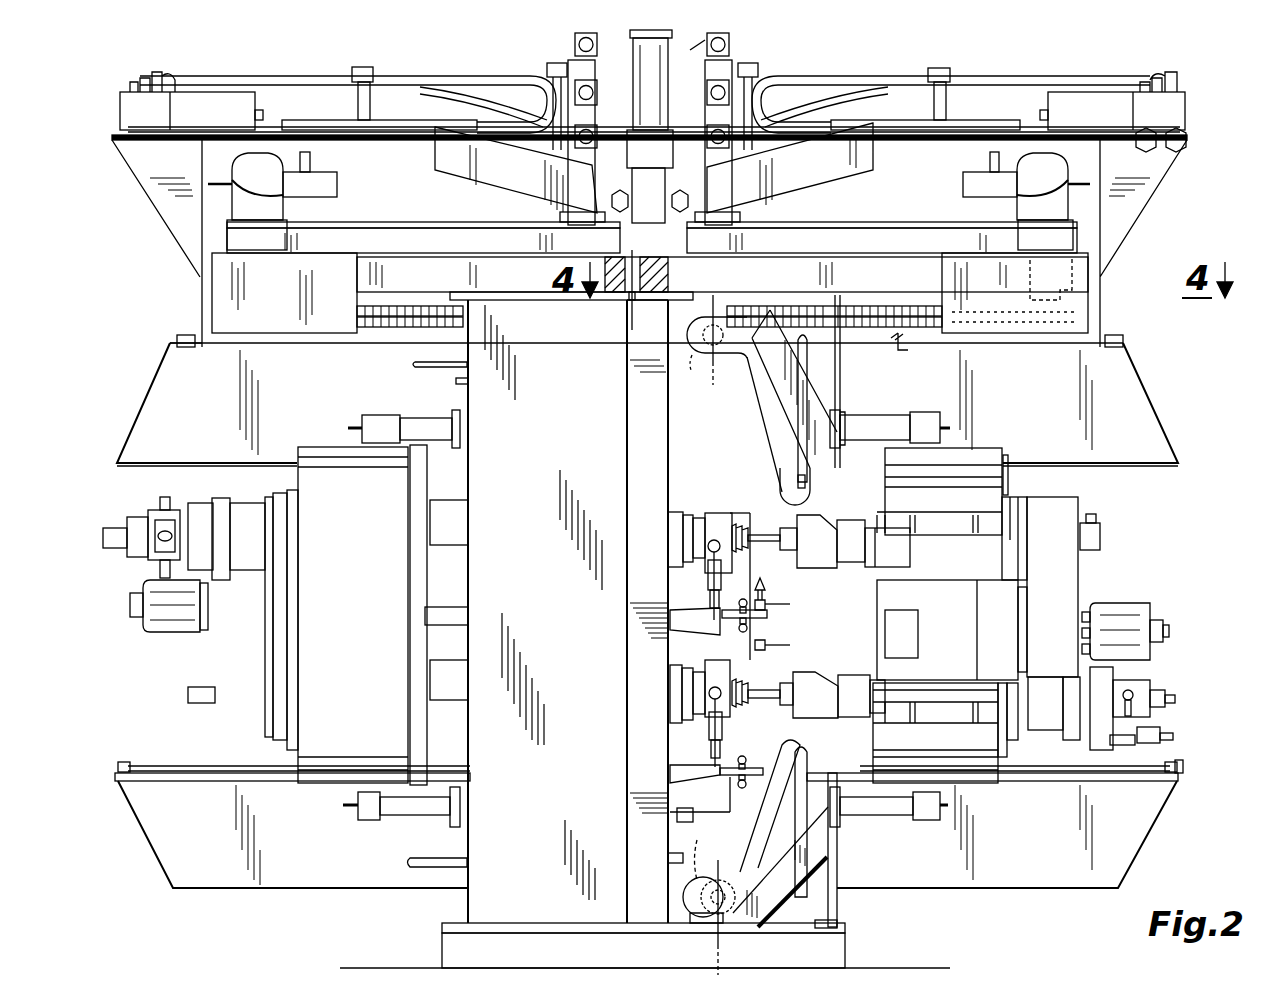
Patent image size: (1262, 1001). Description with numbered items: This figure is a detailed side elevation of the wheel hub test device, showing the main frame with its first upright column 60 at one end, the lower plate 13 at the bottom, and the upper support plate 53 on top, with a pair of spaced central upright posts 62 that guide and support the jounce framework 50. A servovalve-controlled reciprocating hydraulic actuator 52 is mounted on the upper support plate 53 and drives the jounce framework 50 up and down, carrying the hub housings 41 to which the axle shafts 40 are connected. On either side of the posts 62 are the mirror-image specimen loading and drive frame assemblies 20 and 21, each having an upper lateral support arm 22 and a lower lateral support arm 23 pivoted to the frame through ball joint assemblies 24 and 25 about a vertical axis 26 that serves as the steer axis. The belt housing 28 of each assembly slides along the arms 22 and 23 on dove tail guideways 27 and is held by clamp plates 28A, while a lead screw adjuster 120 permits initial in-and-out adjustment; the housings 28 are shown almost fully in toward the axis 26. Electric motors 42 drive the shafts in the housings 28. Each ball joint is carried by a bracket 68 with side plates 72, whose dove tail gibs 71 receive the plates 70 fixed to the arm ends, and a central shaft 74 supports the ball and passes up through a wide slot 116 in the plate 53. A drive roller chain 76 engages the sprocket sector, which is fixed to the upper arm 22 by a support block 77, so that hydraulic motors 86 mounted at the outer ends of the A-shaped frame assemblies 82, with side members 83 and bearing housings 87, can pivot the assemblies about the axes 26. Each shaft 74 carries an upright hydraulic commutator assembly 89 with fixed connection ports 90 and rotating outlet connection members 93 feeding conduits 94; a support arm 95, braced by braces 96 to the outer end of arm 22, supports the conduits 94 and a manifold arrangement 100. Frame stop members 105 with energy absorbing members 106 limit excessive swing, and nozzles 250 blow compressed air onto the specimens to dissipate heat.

The lower plate 13 is at (848, 944).
The specimen loading and drive frame assembly 20 is at (1154, 551).
The specimen loading and drive frame assembly 21 is at (148, 352).
The upper lateral support arm 22 is at (150, 405).
The lower lateral support arm 23 is at (150, 850).
The ball joint assembly 24 is at (687, 372).
The ball joint assembly 25 is at (690, 853).
The axis of pivoting 26 is at (715, 370).
The dove tail guideway 27 is at (178, 463).
The belt housing 28 is at (362, 602).
The clamp plate 28A is at (993, 448).
The axle shaft 40 is at (768, 535).
The hub housing 41 is at (738, 550).
The electric motor 42 is at (1003, 612).
The jounce framework 50 is at (712, 513).
The reciprocating hydraulic actuator 52 is at (633, 58).
The upper support plate 53 is at (850, 272).
The first upright column 60 is at (478, 380).
The central upright post 62 is at (627, 357).
The bracket 68 is at (775, 406).
The plate 70 is at (400, 344).
The dove tail gib 71 is at (798, 485).
The side plate 72 is at (778, 455).
The central shaft 74 is at (722, 270).
The drive roller chain 76 is at (383, 306).
The support block 77 is at (908, 345).
The frame assembly 82 is at (428, 224).
The side member 83 is at (360, 222).
The hydraulic motor 86 is at (232, 158).
The bearing housing 87 is at (1030, 268).
The hydraulic commutator assembly 89 is at (750, 46).
The hydraulic oil connection port 90 is at (582, 88).
The commutator outlet connection member 93 is at (596, 92).
The conduit 94 is at (413, 127).
The support arm 95 is at (435, 152).
The brace 96 is at (170, 205).
The manifold arrangement 100 is at (120, 100).
The frame stop member 105 is at (400, 418).
The energy absorbing member 106 is at (348, 428).
The wide slot 116 is at (730, 258).
The lead screw adjuster 120 is at (148, 766).
The nozzle 250 is at (770, 645).